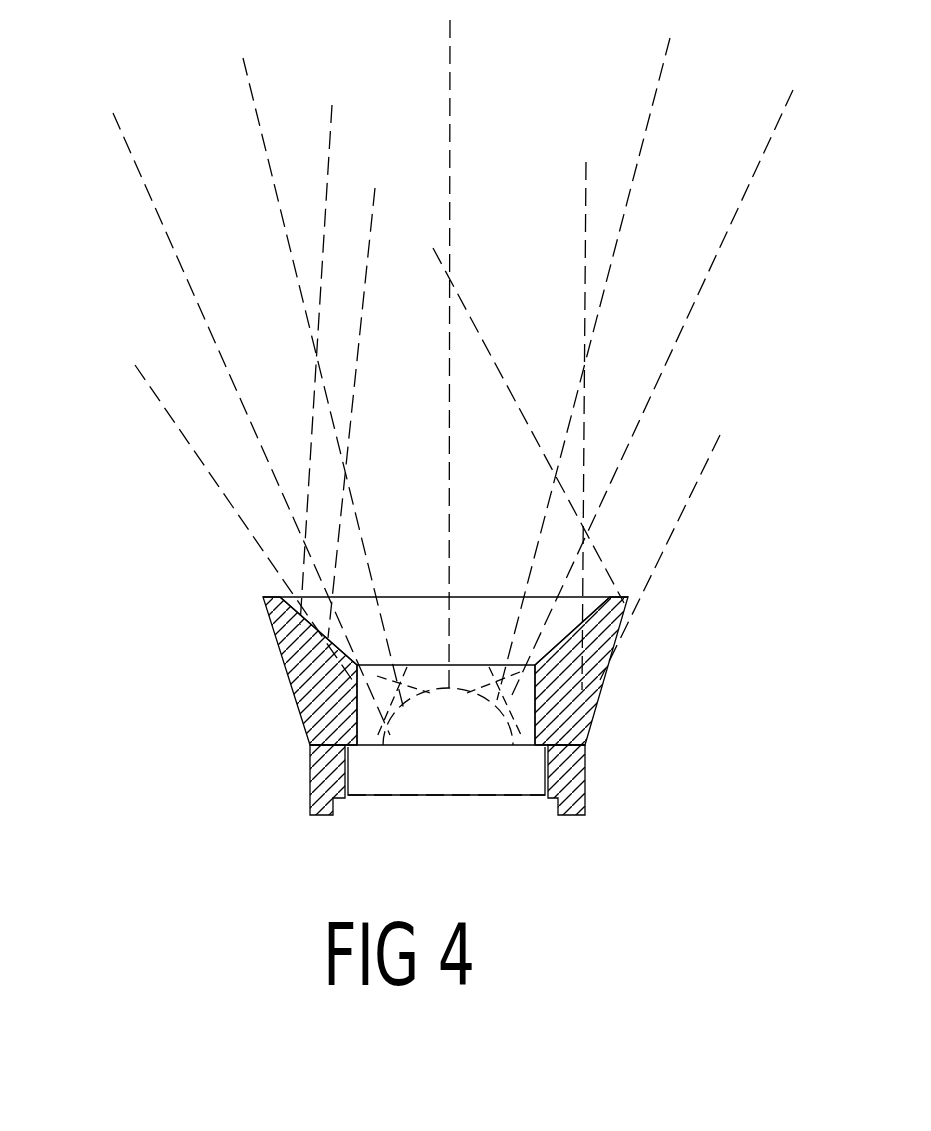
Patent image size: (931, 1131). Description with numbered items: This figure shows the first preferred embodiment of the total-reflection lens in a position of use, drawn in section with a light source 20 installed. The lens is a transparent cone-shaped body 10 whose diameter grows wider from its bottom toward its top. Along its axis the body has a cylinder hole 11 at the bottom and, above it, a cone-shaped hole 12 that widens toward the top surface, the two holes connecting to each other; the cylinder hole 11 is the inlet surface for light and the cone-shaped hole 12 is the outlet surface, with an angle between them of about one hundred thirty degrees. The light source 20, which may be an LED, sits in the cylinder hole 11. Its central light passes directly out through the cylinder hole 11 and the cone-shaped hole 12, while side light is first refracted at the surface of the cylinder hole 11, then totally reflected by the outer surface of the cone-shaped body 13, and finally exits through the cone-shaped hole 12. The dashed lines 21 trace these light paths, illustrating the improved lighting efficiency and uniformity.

The transparent cone-shaped body 10 is at (715, 607).
The cylinder hole 11 is at (520, 702).
The cone-shaped hole 12 is at (313, 615).
The outer surface of the cone-shaped body 13 is at (287, 685).
The light source 20 is at (435, 693).
The light rays 21 is at (357, 360).